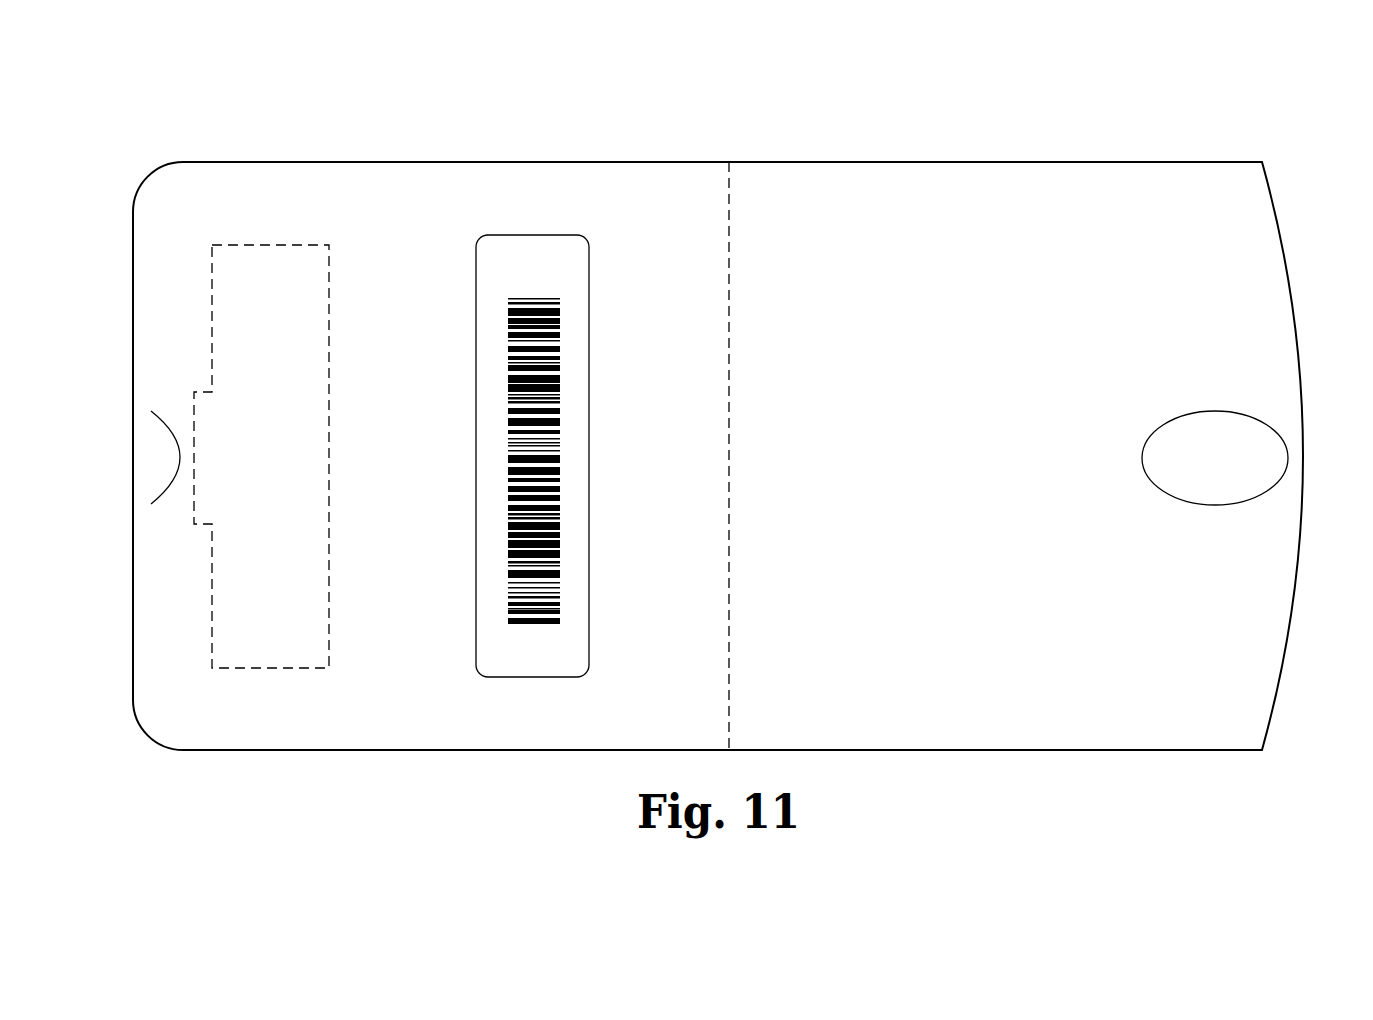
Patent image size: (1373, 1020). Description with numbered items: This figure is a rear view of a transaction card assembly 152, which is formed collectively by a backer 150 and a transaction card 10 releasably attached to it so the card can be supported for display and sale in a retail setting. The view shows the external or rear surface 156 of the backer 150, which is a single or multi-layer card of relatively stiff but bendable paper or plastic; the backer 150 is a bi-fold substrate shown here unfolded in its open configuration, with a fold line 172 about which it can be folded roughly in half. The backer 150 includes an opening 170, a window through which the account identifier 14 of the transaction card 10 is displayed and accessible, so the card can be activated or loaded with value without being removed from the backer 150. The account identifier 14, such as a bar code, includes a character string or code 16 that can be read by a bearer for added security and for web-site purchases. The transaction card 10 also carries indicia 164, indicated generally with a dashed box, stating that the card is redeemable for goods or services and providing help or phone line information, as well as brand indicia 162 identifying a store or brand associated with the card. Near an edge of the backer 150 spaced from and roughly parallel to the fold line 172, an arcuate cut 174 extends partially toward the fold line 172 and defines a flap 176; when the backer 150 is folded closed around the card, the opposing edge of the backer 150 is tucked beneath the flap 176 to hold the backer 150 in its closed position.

The backer 150 is at (148, 176).
The transaction card assembly 152 is at (148, 88).
The fold line 172 is at (732, 203).
The indicia 164 is at (278, 245).
The cut 174 is at (152, 412).
The flap 176 is at (163, 468).
The transaction card 10 is at (540, 260).
The account identifier 14 is at (517, 628).
The character string or code 16 is at (572, 300).
The opening 170 is at (586, 632).
The rear surface 156 is at (1235, 258).
The brand indicia 162 is at (1262, 455).